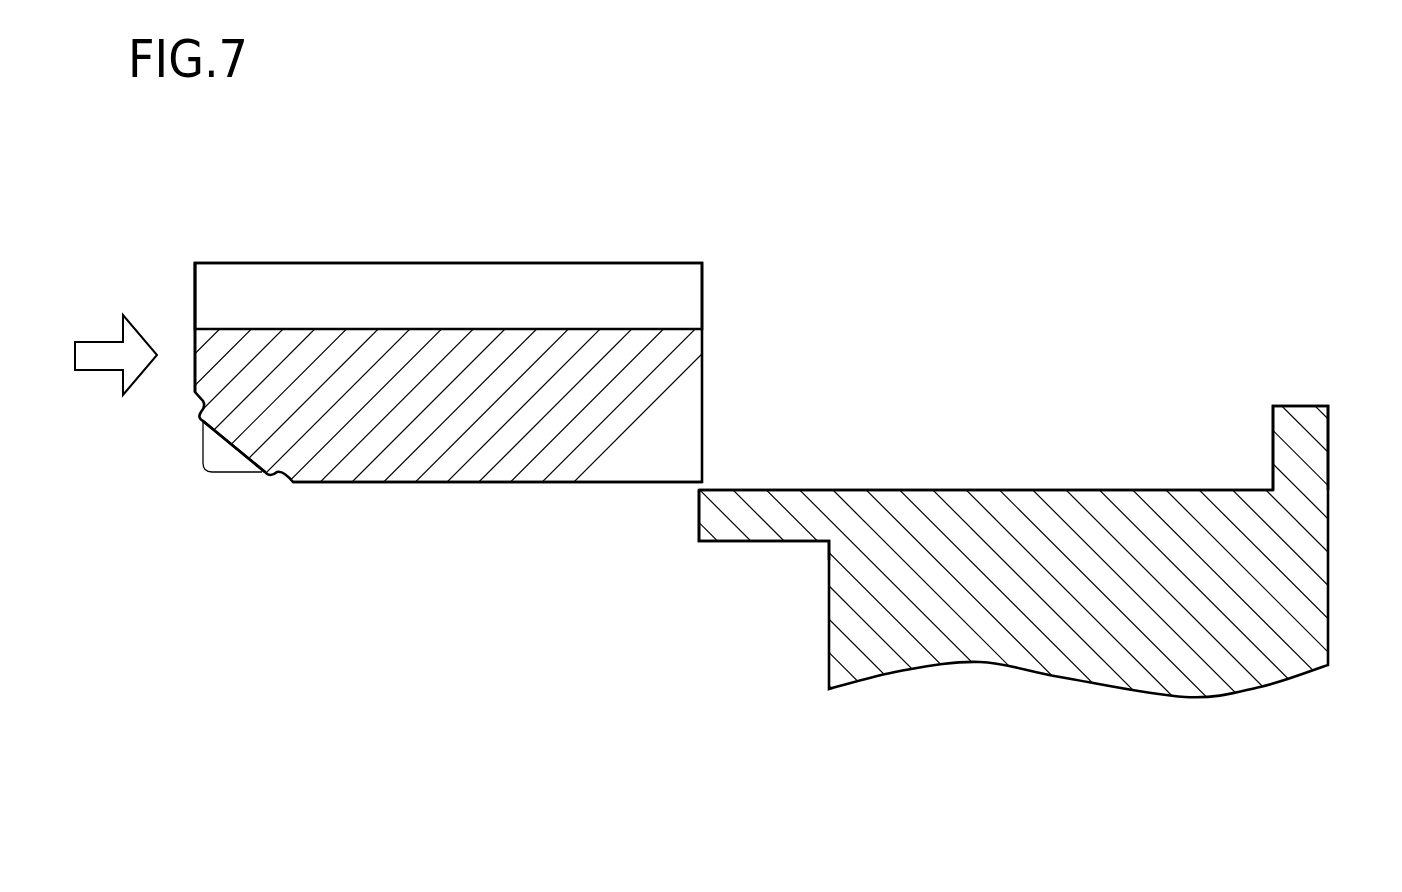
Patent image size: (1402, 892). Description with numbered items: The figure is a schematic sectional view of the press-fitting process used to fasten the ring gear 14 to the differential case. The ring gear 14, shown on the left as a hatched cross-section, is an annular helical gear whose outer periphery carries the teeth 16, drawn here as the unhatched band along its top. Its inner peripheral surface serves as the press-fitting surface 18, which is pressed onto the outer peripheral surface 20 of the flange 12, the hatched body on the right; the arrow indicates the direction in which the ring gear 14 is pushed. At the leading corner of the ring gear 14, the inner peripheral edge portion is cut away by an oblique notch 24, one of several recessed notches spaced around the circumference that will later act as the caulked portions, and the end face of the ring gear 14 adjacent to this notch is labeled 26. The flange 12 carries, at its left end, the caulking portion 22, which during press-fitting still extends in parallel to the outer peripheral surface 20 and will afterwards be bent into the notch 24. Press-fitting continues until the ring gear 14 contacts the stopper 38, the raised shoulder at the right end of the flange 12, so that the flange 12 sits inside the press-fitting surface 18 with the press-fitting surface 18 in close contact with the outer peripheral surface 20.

The flange 12 is at (1328, 595).
The ring gear 14 is at (703, 297).
The teeth 16 is at (433, 285).
The press-fitting surface 18 is at (400, 483).
The outer peripheral surface 20 is at (1122, 490).
The caulking portion 22 is at (739, 522).
The notch 24 is at (235, 447).
The side surface 26 is at (195, 345).
The stopper 38 is at (1298, 433).